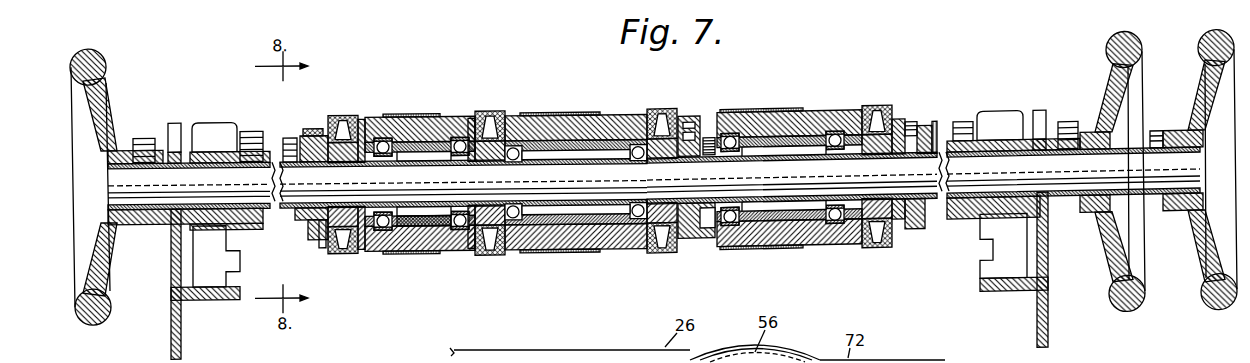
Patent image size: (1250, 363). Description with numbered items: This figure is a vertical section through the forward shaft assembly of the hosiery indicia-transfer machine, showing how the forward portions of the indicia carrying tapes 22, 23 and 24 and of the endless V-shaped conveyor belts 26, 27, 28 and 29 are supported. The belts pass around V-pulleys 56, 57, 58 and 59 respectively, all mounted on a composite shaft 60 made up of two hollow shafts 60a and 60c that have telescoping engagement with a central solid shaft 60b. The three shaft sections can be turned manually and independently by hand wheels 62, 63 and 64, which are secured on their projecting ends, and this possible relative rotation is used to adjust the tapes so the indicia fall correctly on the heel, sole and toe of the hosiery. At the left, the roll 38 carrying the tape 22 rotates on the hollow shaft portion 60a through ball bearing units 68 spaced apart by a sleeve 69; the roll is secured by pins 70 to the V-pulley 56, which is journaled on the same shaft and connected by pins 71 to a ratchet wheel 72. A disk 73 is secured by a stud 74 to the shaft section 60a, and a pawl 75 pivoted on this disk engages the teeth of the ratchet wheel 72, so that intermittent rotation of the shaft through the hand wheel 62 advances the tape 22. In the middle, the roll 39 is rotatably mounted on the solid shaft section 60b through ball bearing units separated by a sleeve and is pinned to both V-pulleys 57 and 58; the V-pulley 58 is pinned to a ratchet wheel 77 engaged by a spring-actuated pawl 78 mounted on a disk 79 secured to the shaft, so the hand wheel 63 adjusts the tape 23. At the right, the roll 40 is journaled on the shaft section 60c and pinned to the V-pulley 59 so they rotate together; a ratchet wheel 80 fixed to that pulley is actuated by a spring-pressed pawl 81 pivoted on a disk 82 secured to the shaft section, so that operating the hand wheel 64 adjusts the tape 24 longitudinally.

The indicia carrying tape 22 is at (415, 114).
The indicia carrying tape 23 is at (535, 114).
The indicia carrying tape 24 is at (765, 114).
The V-shaped conveyor belt 26 is at (345, 112).
The V-shaped conveyor belt 27 is at (495, 109).
The V-shaped conveyor belt 28 is at (660, 109).
The V-shaped conveyor belt 29 is at (875, 110).
The roll 38 is at (425, 111).
The roll 39 is at (585, 111).
The roll 40 is at (795, 111).
The V-pulley 56 is at (335, 232).
The V-pulley 57 is at (471, 250).
The V-pulley 58 is at (646, 250).
The V-pulley 59 is at (880, 242).
The composite shaft 60 is at (1157, 140).
The hollow shaft 60a is at (425, 212).
The solid shaft 60b is at (585, 212).
The hollow shaft 60c is at (790, 212).
The hand wheel 62 is at (97, 319).
The hand wheel 63 is at (1220, 322).
The hand wheel 64 is at (1130, 322).
The ball bearing unit 68 is at (383, 135).
The sleeve 69 is at (432, 215).
The pin 70 is at (362, 116).
The pin 71 is at (322, 245).
The ratchet wheel 72 is at (305, 216).
The disk 73 is at (313, 237).
The stud 74 is at (289, 134).
The pawl 75 is at (313, 125).
The ratchet wheel 77 is at (690, 242).
The pawl 78 is at (690, 117).
The disk 79 is at (712, 138).
The ratchet wheel 80 is at (918, 236).
The pawl 81 is at (903, 124).
The disk 82 is at (932, 131).